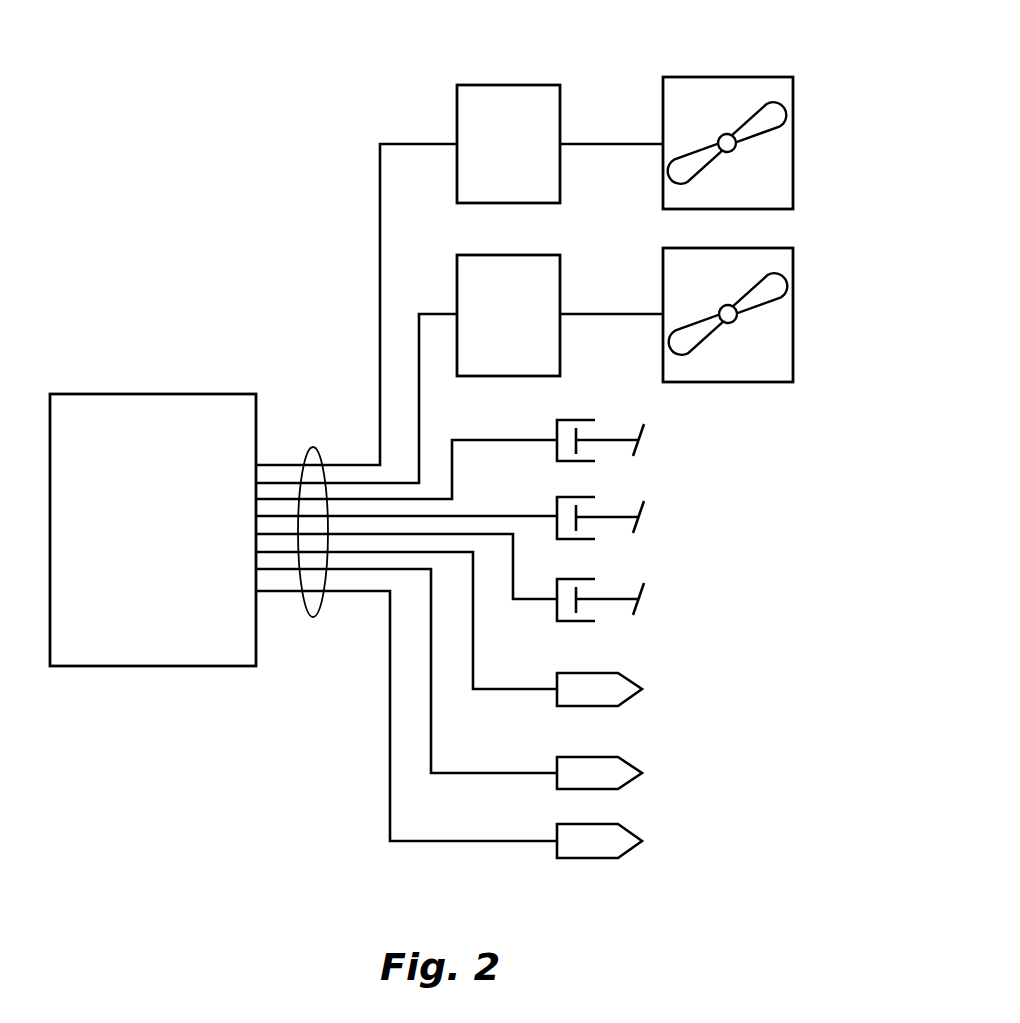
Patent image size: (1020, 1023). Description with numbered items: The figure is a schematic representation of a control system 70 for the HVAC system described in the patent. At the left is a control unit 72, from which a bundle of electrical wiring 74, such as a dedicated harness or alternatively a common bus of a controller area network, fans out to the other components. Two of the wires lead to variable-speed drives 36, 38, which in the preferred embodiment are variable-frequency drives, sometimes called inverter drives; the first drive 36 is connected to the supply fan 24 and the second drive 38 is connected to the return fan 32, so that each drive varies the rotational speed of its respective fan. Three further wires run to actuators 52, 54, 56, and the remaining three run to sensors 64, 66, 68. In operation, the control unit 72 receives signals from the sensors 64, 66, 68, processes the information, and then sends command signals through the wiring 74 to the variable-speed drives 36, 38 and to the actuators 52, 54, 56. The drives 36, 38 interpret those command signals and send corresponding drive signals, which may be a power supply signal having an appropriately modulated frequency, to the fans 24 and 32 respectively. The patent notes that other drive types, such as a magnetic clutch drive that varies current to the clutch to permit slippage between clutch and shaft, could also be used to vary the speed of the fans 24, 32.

The supply fan 24 is at (765, 77).
The return fan 32 is at (767, 248).
The variable-speed drive 36 is at (480, 85).
The variable-speed drive 38 is at (508, 255).
The actuator 52 is at (563, 415).
The actuator 54 is at (577, 495).
The actuator 56 is at (577, 577).
The sensor 64 is at (625, 673).
The sensor 66 is at (625, 757).
The sensor 68 is at (625, 824).
The control system 70 is at (150, 199).
The control unit 72 is at (86, 666).
The electrical wiring 74 is at (313, 618).